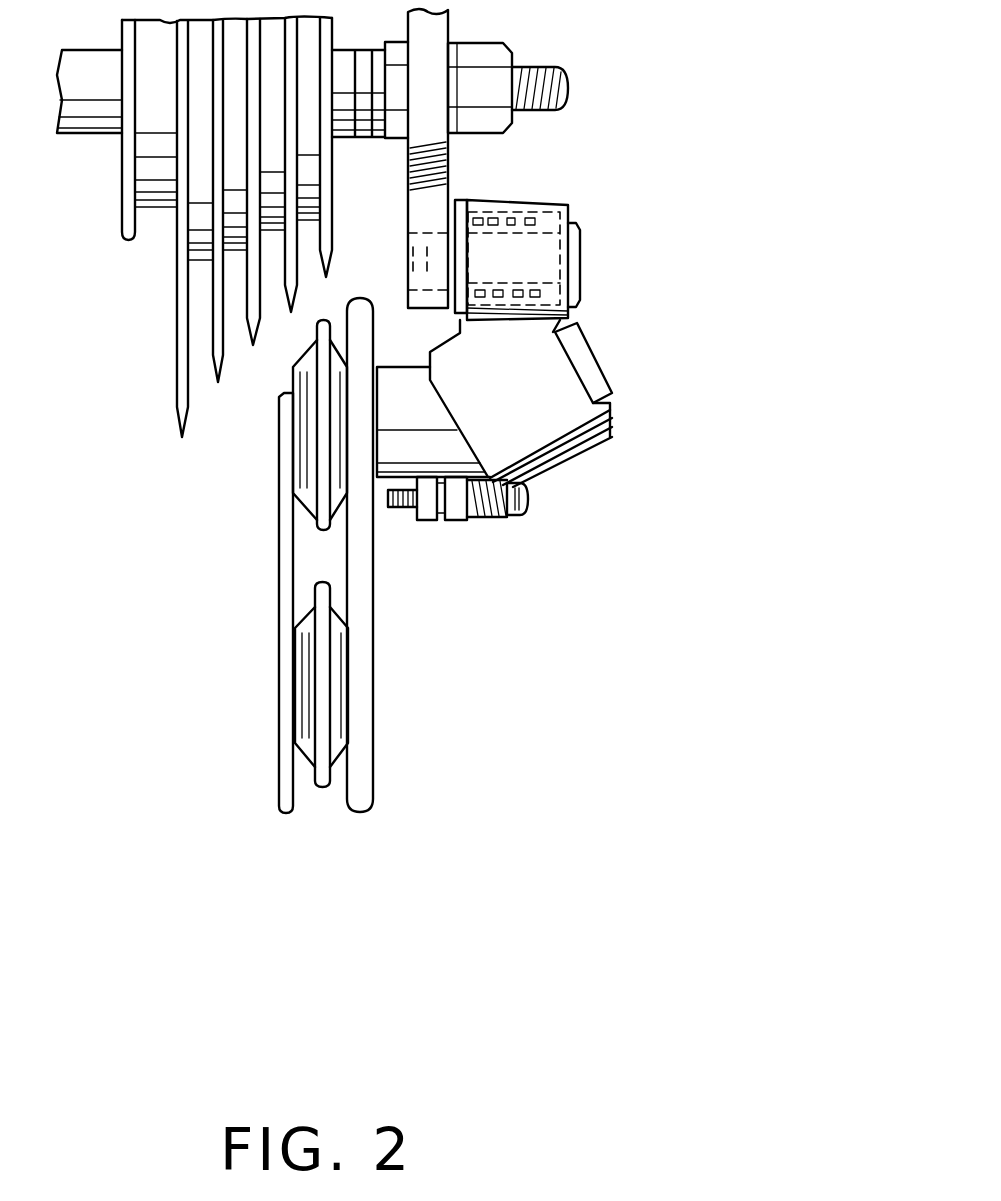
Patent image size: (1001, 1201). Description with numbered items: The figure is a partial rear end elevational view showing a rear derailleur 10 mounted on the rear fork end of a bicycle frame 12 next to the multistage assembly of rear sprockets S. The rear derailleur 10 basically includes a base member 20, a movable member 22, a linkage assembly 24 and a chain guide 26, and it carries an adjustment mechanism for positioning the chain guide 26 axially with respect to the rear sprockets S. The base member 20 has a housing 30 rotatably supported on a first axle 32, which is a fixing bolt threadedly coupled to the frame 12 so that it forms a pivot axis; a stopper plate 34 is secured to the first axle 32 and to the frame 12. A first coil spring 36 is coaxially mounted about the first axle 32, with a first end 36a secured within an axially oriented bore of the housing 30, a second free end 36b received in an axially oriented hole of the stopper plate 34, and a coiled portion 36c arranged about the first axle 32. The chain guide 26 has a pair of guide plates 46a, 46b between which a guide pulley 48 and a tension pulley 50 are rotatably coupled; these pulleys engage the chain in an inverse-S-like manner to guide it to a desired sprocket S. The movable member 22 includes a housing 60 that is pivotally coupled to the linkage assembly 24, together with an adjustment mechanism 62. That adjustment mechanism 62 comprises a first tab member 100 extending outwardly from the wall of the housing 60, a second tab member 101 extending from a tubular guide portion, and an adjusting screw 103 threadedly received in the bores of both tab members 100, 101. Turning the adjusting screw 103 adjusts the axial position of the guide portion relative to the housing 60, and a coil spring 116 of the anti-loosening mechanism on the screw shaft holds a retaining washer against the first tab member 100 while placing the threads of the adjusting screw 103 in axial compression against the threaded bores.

The rear derailleur 10 is at (733, 280).
The frame 12 is at (440, 165).
The base member 20 is at (548, 210).
The movable member 22 is at (554, 410).
The linkage assembly 24 is at (587, 362).
The chain guide 26 is at (325, 555).
The housing 30 is at (550, 198).
The first axle 32 is at (410, 248).
The stopper plate 34 is at (463, 230).
The first coil spring 36 is at (523, 287).
The first end 36a is at (570, 221).
The second end 36b is at (458, 293).
The coiled portion 36c is at (573, 307).
The guide plate 46a is at (280, 553).
The guide plate 46b is at (370, 677).
The guide pulley 48 is at (320, 438).
The tension pulley 50 is at (320, 663).
The housing 60 is at (453, 440).
The adjustment mechanism 62 is at (570, 551).
The first tab member 100 is at (453, 522).
The second tab member 101 is at (427, 523).
The adjusting screw 103 is at (523, 513).
The coil spring 116 is at (480, 517).
The rear sprockets S is at (172, 352).